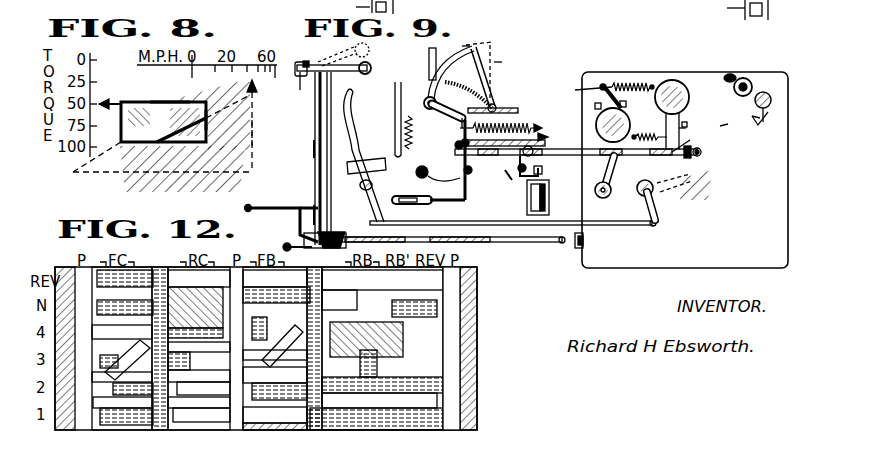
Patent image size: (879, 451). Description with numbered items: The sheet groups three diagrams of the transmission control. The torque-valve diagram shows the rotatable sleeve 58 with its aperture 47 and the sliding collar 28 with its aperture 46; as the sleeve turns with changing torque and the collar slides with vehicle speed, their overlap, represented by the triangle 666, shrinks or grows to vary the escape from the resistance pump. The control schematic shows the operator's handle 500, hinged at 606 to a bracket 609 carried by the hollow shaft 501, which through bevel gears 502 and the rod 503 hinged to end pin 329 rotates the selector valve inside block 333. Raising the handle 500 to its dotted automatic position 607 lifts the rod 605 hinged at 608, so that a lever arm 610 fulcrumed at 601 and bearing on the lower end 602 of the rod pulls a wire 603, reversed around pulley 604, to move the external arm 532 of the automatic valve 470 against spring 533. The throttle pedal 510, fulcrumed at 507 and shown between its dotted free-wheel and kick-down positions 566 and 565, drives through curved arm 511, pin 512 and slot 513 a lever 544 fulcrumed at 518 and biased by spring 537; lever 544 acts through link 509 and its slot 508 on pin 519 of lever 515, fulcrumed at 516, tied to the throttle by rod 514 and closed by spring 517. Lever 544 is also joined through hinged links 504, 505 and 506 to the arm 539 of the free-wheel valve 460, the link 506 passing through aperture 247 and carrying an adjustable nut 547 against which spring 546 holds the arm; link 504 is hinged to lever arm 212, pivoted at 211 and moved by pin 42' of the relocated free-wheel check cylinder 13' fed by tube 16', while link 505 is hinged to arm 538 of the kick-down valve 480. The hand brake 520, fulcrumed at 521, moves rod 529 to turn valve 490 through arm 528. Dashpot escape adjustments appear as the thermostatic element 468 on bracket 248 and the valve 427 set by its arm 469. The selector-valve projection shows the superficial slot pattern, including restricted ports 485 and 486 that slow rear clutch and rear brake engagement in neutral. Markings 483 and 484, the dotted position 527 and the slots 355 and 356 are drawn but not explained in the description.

In FIG. 8, the rotatable sleeve 58 is at (163, 122).
In FIG. 8, the sliding collar 28 is at (183, 161).
In FIG. 8, the aperture 46 is at (172, 102).
In FIG. 8, the torque valve opening 666 is at (207, 120).
In FIG. 8, the aperture 47 is at (250, 136).
In FIG. 9, the section reference 483 is at (359, 8).
In FIG. 9, the section reference 484 is at (732, 10).
In FIG. 9, the automatic position 607 is at (345, 52).
In FIG. 9, the handle 500 is at (369, 68).
In FIG. 9, the hinge 608 is at (297, 63).
In FIG. 9, the hinge 606 is at (300, 76).
In FIG. 9, the hollow shaft 501 is at (314, 168).
In FIG. 9, the bracket 609 is at (314, 149).
In FIG. 9, the bevel gears 502 is at (314, 215).
In FIG. 9, the rod 605 is at (312, 196).
In FIG. 9, the wire 603 is at (290, 202).
In FIG. 9, the pulley 604 is at (246, 208).
In FIG. 9, the lower end of rod 602 is at (298, 236).
In FIG. 9, the fulcrum 601 is at (300, 246).
In FIG. 9, the lever arm 610 is at (332, 242).
In FIG. 9, the throttle rod 514 is at (358, 120).
In FIG. 9, the fulcrum 521 is at (363, 198).
In FIG. 9, the pin 519 is at (374, 172).
In FIG. 9, the hand brake 520 is at (394, 98).
In FIG. 9, the spring 517 is at (405, 136).
In FIG. 9, the curved arm 511 is at (438, 66).
In FIG. 9, the pin 512 is at (430, 101).
In FIG. 9, the throttle pedal 510 is at (478, 52).
In FIG. 9, the kick-down position 565 is at (466, 46).
In FIG. 9, the free-wheel position 566 is at (498, 60).
In FIG. 9, the fulcrum 507 is at (503, 108).
In FIG. 9, the slot 513 is at (447, 115).
In FIG. 9, the spring 537 is at (522, 126).
In FIG. 9, the lever 515 is at (456, 148).
In FIG. 9, the fulcrum 516 is at (428, 174).
In FIG. 9, the slot 508 is at (413, 205).
In FIG. 9, the link 509 is at (441, 205).
In FIG. 9, the lever 544 is at (474, 150).
In FIG. 9, the fulcrum 518 is at (471, 173).
In FIG. 9, the pivot 211 is at (506, 185).
In FIG. 9, the second link 505 is at (560, 148).
In FIG. 9, the first link 504 is at (548, 143).
In FIG. 9, the third link 506 is at (700, 156).
In FIG. 9, the tube 16' is at (524, 199).
In FIG. 9, the cylinder 13' is at (553, 197).
In FIG. 9, the lever arm 212 is at (541, 168).
In FIG. 9, the extension pin 42' is at (555, 177).
In FIG. 9, the rod 529 is at (612, 227).
In FIG. 9, the rod 503 is at (518, 244).
In FIG. 9, the end pin 329 is at (563, 253).
In FIG. 9, the block 333 is at (755, 250).
In FIG. 9, the automatic valve 470 is at (628, 103).
In FIG. 9, the free-wheel valve 460 is at (672, 80).
In FIG. 9, the spring 533 is at (626, 84).
In FIG. 9, the external arm 532 is at (603, 84).
In FIG. 9, the spring 546 is at (655, 130).
In FIG. 9, the bracket 248 is at (726, 78).
In FIG. 9, the thermostatic element 468 is at (738, 80).
In FIG. 9, the dashpot escape valve 427 is at (765, 92).
In FIG. 9, the aperture 247 is at (728, 124).
In FIG. 9, the arm 539 is at (683, 128).
In FIG. 9, the external arm 469 is at (758, 120).
In FIG. 9, the adjustable nut 547 is at (680, 146).
In FIG. 9, the kick-down valve 480 is at (603, 200).
In FIG. 9, the arm 538 is at (609, 175).
In FIG. 9, the valve 490 is at (648, 198).
In FIG. 9, the external arm 528 is at (657, 212).
In FIG. 9, the phantom position 527 is at (684, 181).
In FIG. 12, the cam slot 356 is at (170, 280).
In FIG. 12, the restricted port 485 is at (195, 308).
In FIG. 12, the cam slot 355 is at (326, 280).
In FIG. 12, the restricted port 486 is at (350, 322).